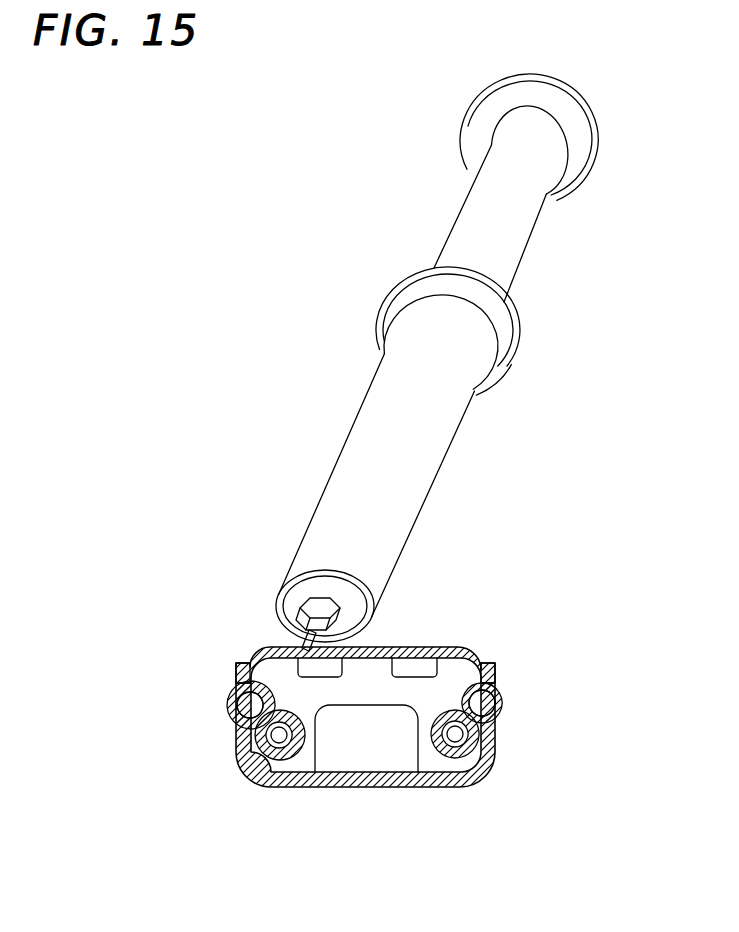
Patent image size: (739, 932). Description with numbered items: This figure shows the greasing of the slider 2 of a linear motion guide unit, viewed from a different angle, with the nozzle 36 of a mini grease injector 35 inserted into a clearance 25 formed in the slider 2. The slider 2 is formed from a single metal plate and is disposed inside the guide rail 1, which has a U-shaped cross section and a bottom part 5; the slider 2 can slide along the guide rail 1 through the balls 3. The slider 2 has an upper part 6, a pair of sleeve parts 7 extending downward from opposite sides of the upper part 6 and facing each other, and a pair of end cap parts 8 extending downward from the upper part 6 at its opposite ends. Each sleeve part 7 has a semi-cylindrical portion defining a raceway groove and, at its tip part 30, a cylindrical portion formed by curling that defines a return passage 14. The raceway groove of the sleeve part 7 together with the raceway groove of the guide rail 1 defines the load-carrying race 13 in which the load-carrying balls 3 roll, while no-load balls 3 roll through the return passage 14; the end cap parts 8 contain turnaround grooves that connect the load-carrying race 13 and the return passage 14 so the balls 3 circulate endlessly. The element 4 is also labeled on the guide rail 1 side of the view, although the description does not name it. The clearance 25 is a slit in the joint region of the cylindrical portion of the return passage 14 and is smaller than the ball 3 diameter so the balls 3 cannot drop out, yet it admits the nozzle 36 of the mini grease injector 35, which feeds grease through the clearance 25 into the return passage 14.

The guide rail 1 is at (310, 790).
The slider 2 is at (417, 647).
The balls 3 is at (279, 740).
The projection 4 is at (494, 736).
The bottom part 5 is at (405, 790).
The upper part 6 is at (330, 596).
The sleeve parts 7 is at (240, 722).
The end cap parts 8 is at (372, 688).
The load-carrying race 13 is at (248, 702).
The return passage 14 is at (258, 788).
The clearance 25 is at (522, 592).
The tip part 30 is at (451, 790).
The mini grease injector 35 is at (455, 358).
The nozzle 36 is at (288, 695).